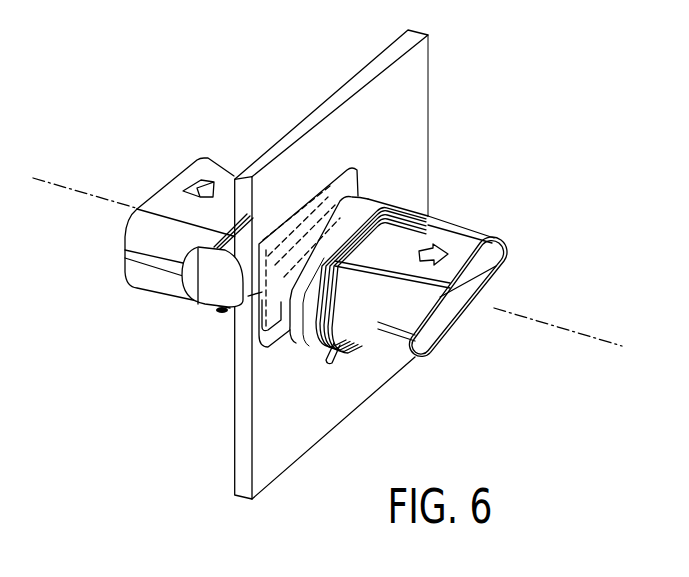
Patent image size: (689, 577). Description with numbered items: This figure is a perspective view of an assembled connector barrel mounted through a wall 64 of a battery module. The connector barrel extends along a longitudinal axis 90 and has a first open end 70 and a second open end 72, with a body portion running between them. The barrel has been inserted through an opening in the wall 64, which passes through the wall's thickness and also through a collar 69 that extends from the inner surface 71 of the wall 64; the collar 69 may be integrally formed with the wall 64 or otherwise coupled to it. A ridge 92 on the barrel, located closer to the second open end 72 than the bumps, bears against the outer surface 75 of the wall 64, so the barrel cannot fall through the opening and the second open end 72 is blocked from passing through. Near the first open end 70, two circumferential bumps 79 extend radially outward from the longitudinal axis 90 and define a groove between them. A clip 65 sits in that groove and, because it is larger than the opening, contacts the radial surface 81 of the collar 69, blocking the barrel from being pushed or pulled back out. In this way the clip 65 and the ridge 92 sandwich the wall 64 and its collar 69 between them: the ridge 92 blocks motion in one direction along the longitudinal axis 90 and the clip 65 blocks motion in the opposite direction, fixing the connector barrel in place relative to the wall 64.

The wall 64 is at (245, 194).
The clip 65 is at (417, 188).
The collar 69 is at (378, 196).
The first open end 70 is at (480, 285).
The inner surface 71 is at (337, 137).
The second open end 72 is at (100, 240).
The outer surface 75 is at (230, 208).
The circumferential bumps 79 is at (362, 292).
The radial surface 81 is at (406, 202).
The longitudinal axis 90 is at (68, 186).
The ridge 92 is at (314, 176).